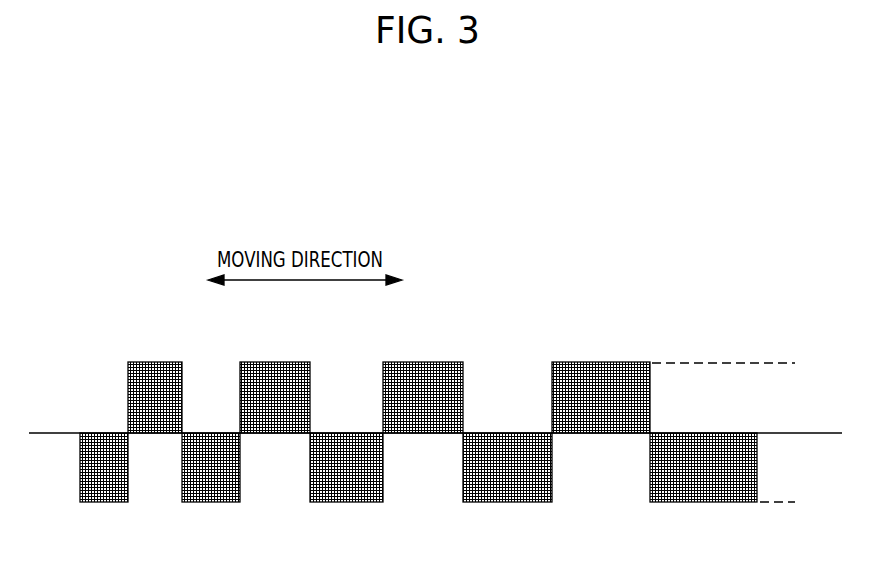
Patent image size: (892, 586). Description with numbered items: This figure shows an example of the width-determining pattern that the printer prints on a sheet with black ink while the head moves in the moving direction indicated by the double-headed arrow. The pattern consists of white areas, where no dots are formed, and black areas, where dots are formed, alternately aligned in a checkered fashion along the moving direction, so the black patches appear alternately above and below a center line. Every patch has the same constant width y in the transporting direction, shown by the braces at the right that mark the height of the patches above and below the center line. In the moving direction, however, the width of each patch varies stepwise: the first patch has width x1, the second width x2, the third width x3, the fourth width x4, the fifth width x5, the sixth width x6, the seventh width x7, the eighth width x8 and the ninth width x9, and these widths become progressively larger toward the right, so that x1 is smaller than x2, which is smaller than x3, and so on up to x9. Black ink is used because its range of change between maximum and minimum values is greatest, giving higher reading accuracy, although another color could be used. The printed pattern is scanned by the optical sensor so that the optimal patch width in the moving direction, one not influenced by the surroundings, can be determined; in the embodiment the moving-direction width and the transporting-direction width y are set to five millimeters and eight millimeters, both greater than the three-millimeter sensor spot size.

The width of first pattern in moving direction x1 is at (128, 503).
The width of second pattern in moving direction x2 is at (182, 361).
The width of third pattern in moving direction x3 is at (240, 503).
The width of fourth pattern in moving direction x4 is at (310, 361).
The width of fifth pattern in moving direction x5 is at (383, 503).
The width of sixth pattern in moving direction x6 is at (463, 361).
The width of seventh pattern in moving direction x7 is at (552, 503).
The width of eighth pattern in moving direction x8 is at (650, 361).
The width of ninth pattern in moving direction x9 is at (757, 503).
The width in transporting direction y is at (776, 502).